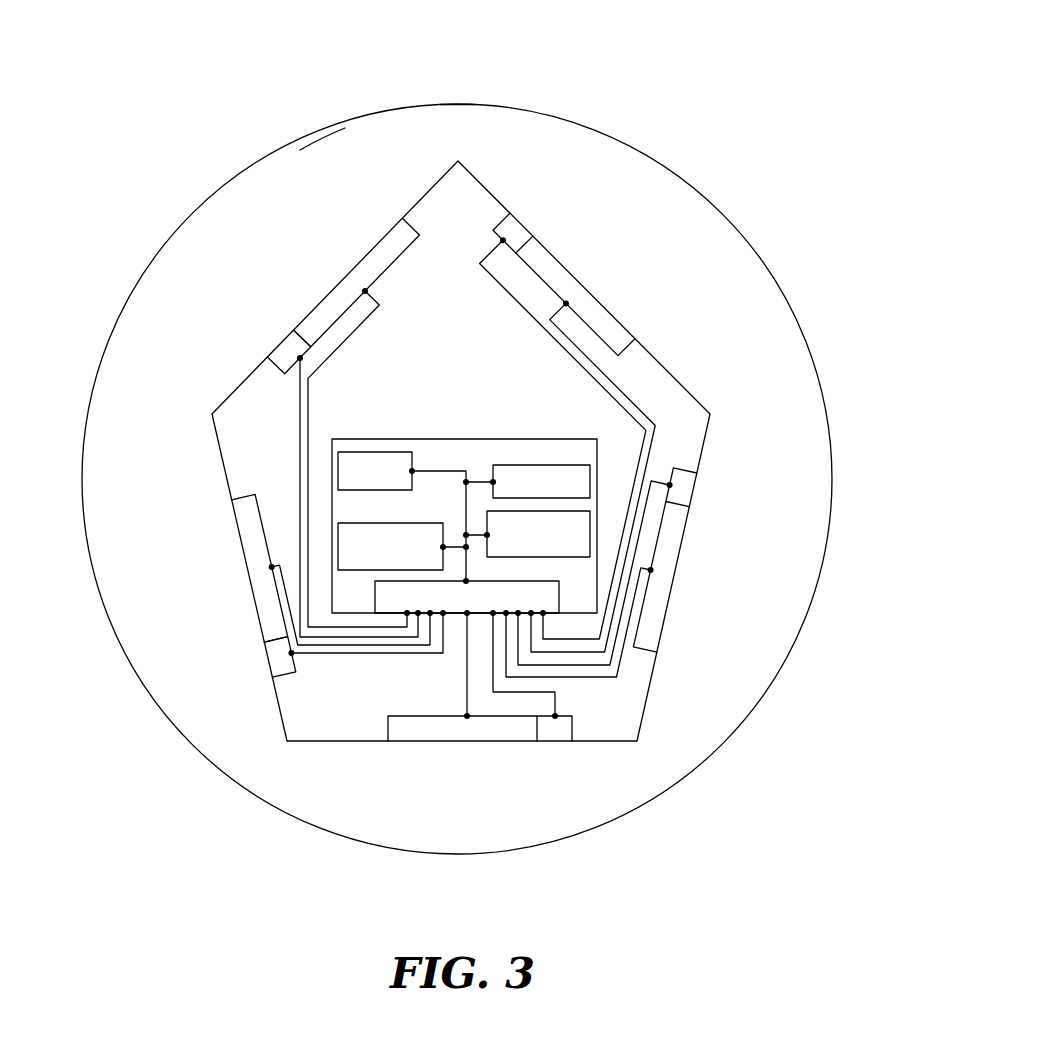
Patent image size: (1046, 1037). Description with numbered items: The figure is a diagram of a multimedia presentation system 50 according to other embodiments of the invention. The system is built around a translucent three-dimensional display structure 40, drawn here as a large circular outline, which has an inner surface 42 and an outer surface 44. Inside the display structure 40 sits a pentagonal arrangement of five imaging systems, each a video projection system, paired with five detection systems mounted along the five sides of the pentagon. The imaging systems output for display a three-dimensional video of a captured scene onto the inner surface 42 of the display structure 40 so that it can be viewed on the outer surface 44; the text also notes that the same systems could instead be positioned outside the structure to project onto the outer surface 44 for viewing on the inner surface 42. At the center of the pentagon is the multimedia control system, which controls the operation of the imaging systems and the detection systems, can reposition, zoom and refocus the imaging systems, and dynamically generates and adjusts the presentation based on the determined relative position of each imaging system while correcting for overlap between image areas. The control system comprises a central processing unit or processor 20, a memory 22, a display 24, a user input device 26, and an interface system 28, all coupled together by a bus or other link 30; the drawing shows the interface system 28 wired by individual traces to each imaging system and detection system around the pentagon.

The translucent three-dimensional display structure 40 is at (148, 270).
The inner surface 42 is at (323, 138).
The outer surface 44 is at (458, 90).
The multimedia presentation system 50 is at (197, 128).
The central processing unit 20 is at (378, 452).
The memory 22 is at (352, 530).
The display 24 is at (578, 470).
The user input device 26 is at (575, 552).
The interface system 28 is at (390, 598).
The bus 30 is at (432, 470).